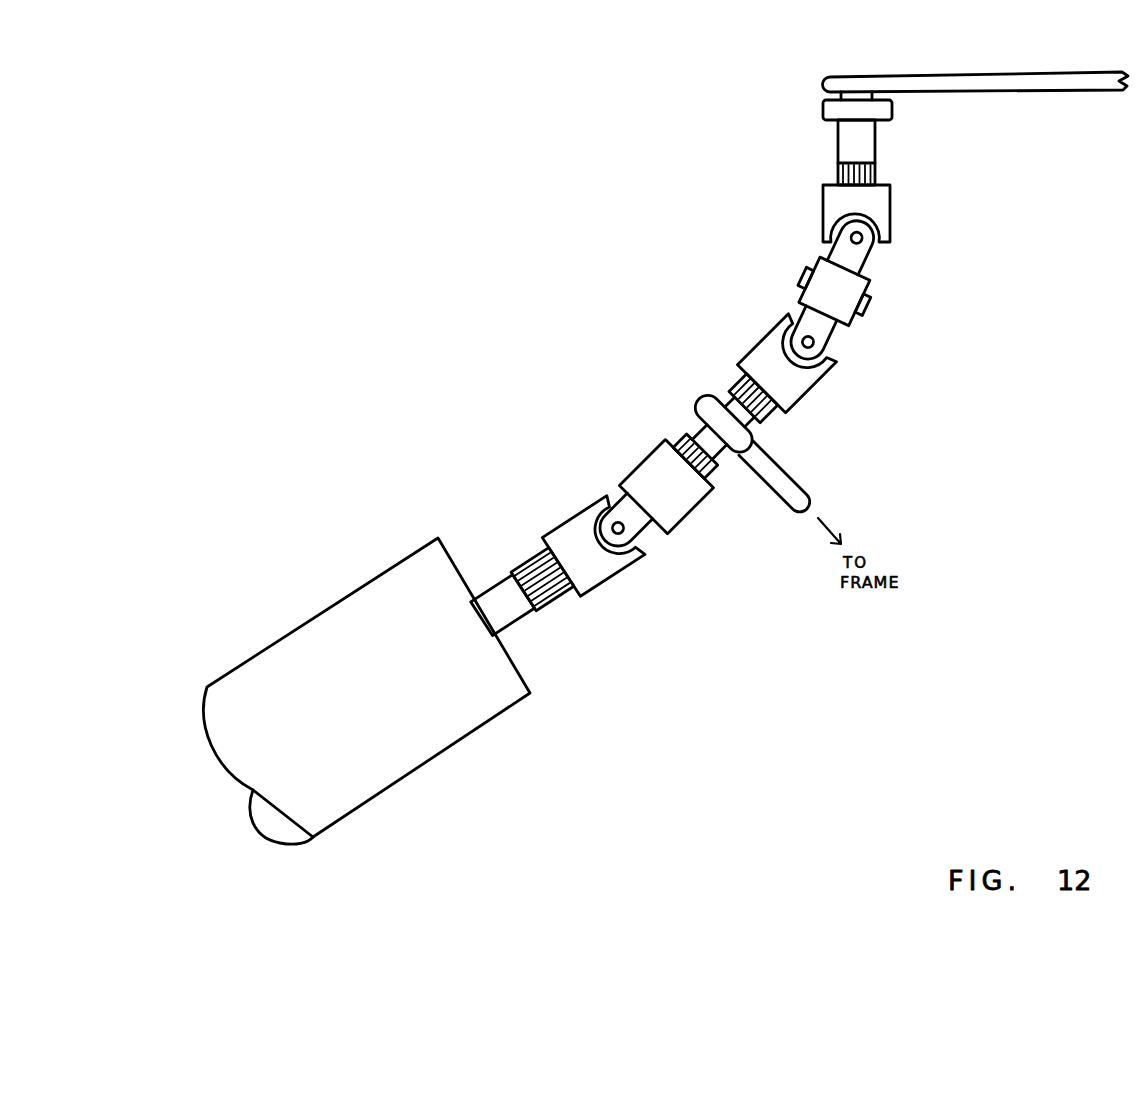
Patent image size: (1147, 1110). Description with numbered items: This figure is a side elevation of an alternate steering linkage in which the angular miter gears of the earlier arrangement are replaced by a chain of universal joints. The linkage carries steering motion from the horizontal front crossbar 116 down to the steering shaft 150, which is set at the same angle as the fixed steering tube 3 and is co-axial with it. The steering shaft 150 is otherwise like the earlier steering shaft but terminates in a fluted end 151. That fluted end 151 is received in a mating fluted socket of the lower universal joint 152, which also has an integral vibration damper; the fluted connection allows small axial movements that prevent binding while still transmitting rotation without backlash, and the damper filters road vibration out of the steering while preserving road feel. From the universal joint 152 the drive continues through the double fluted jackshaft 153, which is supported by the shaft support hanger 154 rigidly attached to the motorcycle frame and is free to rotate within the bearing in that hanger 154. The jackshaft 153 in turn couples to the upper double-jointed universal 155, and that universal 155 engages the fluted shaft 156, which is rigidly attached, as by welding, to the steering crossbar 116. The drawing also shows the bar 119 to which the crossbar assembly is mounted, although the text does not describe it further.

The fixed steering tube 3 is at (333, 636).
The steering shaft 150 is at (495, 595).
The fluted end 151 is at (520, 558).
The universal joint 152 is at (597, 475).
The double fluted jackshaft 153 is at (687, 423).
The shaft support hanger 154 is at (698, 393).
The double-jointed universal 155 is at (895, 312).
The fluted shaft 156 is at (883, 145).
The front crossbar 116 is at (833, 110).
The frame bar 119 is at (957, 83).